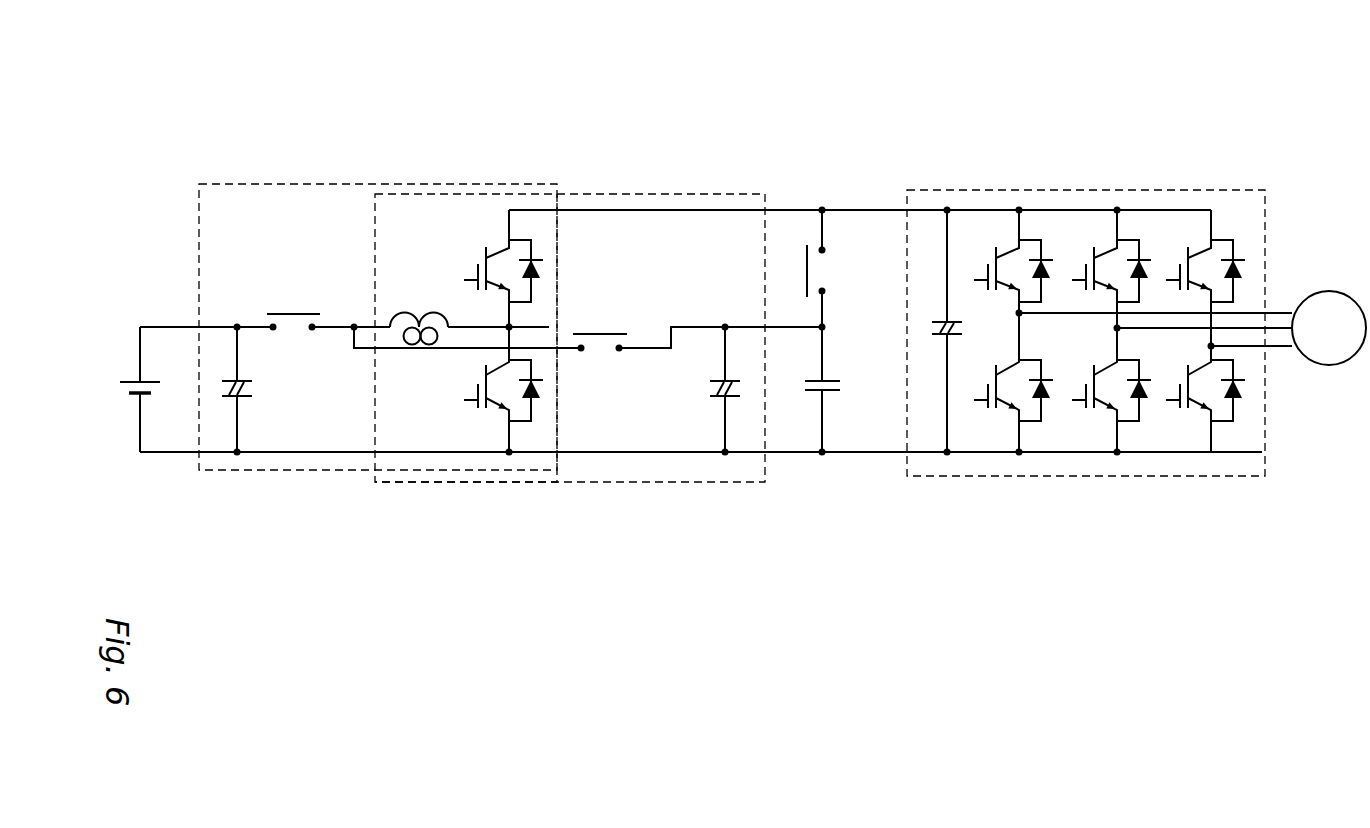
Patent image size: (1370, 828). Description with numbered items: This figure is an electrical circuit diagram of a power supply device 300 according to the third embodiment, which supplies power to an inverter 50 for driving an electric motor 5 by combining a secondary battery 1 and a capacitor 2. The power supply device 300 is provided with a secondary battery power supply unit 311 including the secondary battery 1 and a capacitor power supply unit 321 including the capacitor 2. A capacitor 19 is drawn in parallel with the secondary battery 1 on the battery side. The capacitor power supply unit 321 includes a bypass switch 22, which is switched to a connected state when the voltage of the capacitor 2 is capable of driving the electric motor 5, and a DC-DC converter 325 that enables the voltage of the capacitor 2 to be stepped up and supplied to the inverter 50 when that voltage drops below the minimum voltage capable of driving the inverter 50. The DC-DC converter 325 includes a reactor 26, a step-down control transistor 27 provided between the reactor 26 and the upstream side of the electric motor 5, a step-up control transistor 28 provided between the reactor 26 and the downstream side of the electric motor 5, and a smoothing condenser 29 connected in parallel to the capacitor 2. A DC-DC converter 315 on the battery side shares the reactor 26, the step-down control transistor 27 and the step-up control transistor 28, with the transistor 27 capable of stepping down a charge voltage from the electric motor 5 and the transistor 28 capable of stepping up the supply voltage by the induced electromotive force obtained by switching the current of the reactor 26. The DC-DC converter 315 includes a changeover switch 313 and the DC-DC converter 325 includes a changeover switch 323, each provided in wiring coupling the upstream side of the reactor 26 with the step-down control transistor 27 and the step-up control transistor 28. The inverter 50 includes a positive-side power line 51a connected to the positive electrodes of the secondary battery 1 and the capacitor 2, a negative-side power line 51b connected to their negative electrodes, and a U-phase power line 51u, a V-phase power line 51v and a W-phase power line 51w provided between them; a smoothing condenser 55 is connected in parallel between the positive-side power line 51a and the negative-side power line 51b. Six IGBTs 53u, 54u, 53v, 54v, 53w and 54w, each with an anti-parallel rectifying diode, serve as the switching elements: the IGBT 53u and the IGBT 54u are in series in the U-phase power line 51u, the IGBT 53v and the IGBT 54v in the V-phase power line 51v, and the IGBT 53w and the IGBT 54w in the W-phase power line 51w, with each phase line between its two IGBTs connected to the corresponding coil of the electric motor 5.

The secondary battery 1 is at (138, 393).
The capacitor 2 is at (832, 395).
The electric motor 5 is at (1325, 290).
The capacitor 19 is at (243, 397).
The bypass switch 22 is at (806, 277).
The reactor 26 is at (418, 313).
The step-down control transistor 27 is at (500, 247).
The step-up control transistor 28 is at (498, 408).
The smoothing condenser 29 is at (720, 398).
The inverter 50 is at (1243, 190).
The positive-side power line 51a is at (975, 207).
The negative-side power line 51b is at (978, 455).
The U-phase power line 51u is at (1023, 232).
The V-phase power line 51v is at (1105, 232).
The W-phase power line 51w is at (1208, 230).
The IGBT 53u is at (1012, 290).
The IGBT 53v is at (1110, 290).
The IGBT 53w is at (1200, 292).
The IGBT 54u is at (1012, 410).
The IGBT 54v is at (1110, 410).
The IGBT 54w is at (1200, 410).
The smoothing condenser 55 is at (945, 335).
The power supply device 300 is at (886, 101).
The secondary battery power supply unit 311 is at (497, 168).
The changeover switch 313 is at (291, 313).
The DC-DC converter 315 is at (341, 472).
The capacitor power supply unit 321 is at (806, 181).
The changeover switch 323 is at (600, 334).
The DC-DC converter 325 is at (731, 484).